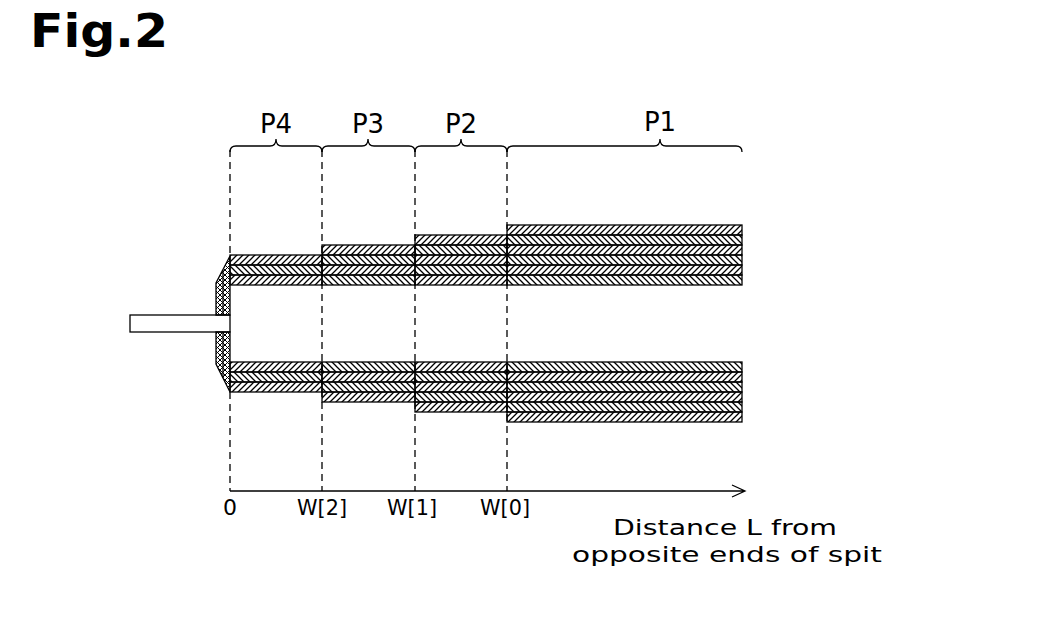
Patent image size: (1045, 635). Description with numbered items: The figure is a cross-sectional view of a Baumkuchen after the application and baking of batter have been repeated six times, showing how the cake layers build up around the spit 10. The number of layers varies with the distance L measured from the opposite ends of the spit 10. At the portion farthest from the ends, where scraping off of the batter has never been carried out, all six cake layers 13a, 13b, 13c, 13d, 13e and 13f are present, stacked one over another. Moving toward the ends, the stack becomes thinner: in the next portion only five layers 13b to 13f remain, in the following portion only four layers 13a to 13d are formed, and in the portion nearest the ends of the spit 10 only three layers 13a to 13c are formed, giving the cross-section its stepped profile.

The spit 10 is at (487, 319).
The cake layer 13a is at (742, 280).
The cake layer 13b is at (742, 270).
The cake layer 13c is at (742, 260).
The cake layer 13d is at (742, 250).
The cake layer 13e is at (742, 240).
The cake layer 13f is at (742, 230).